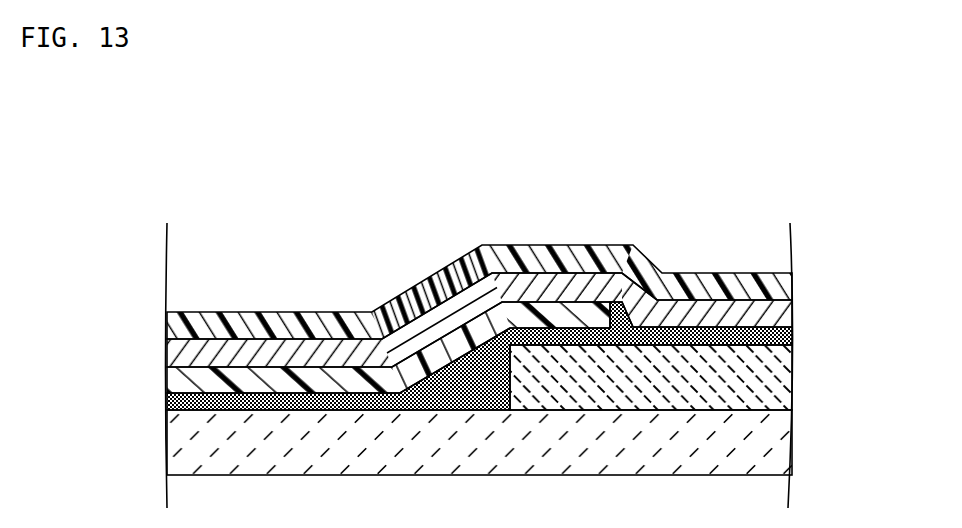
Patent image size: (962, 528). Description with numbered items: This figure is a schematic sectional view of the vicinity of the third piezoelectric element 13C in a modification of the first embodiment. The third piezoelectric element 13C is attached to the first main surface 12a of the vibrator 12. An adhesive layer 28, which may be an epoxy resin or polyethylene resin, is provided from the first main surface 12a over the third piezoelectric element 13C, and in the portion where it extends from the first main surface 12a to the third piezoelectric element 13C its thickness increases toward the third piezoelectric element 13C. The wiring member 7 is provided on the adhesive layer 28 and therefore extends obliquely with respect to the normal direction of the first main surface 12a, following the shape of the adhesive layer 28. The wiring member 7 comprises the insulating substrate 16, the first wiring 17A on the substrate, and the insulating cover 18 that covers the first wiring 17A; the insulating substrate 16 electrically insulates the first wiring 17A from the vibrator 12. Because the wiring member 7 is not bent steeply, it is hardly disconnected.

The wiring member 7 is at (443, 277).
The vibrator 12 is at (759, 447).
The first main surface 12a is at (258, 400).
The third piezoelectric element 13C is at (775, 377).
The insulating substrate 16 is at (192, 380).
The first wiring 17A is at (193, 352).
The insulating cover 18 is at (192, 327).
The adhesive layer 28 is at (777, 333).